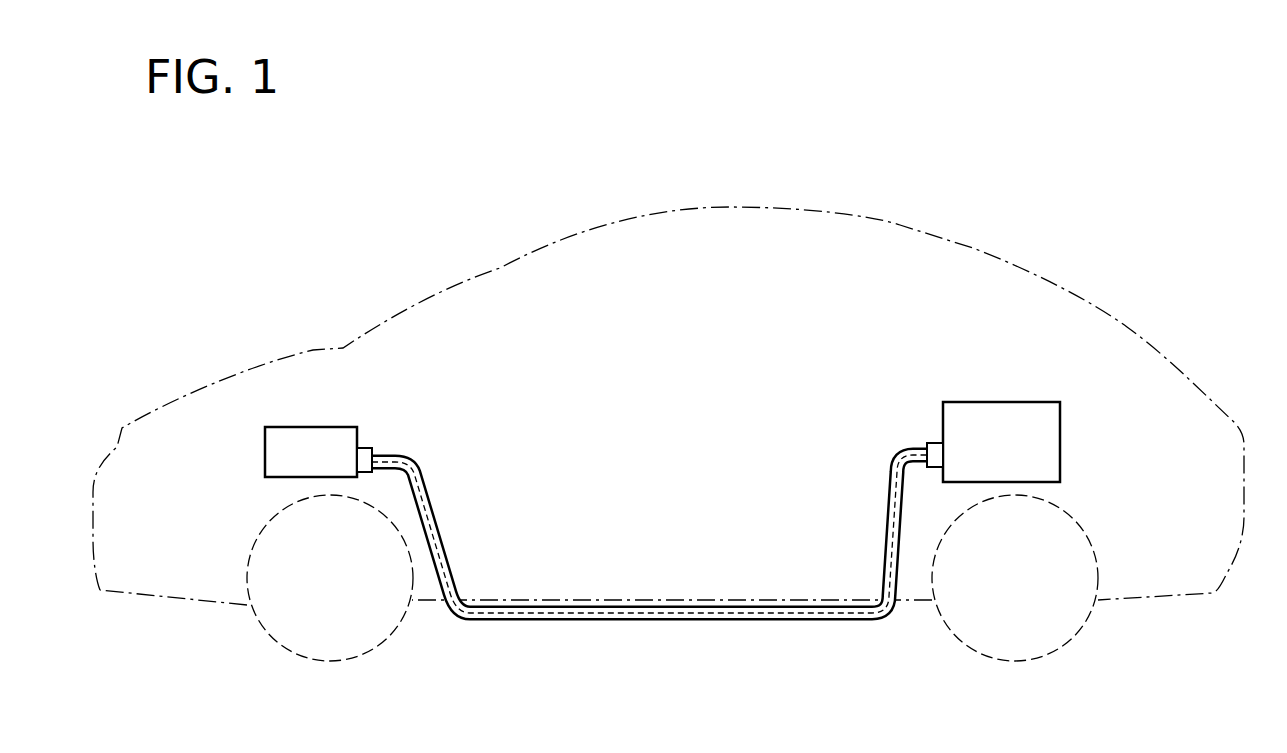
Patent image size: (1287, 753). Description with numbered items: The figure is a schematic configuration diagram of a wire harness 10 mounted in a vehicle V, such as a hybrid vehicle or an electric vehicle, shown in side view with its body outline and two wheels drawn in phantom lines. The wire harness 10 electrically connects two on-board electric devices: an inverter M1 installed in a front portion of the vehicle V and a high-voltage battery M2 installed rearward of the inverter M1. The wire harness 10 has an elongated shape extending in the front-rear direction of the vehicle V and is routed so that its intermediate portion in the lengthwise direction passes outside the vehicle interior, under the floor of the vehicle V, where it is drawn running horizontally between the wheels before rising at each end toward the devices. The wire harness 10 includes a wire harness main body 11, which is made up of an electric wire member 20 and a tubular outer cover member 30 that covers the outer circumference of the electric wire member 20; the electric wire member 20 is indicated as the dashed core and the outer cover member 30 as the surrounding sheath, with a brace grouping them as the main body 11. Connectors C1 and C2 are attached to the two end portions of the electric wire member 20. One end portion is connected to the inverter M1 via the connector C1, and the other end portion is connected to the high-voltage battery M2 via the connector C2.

The vehicle V is at (973, 248).
The wire harness 10 is at (891, 364).
The wire harness main body 11 is at (812, 490).
The electric wire member 20 is at (890, 500).
The tubular outer cover member 30 is at (884, 533).
The inverter M1 is at (316, 427).
The high-voltage battery M2 is at (1030, 402).
The connector C1 is at (363, 448).
The connector C2 is at (934, 443).